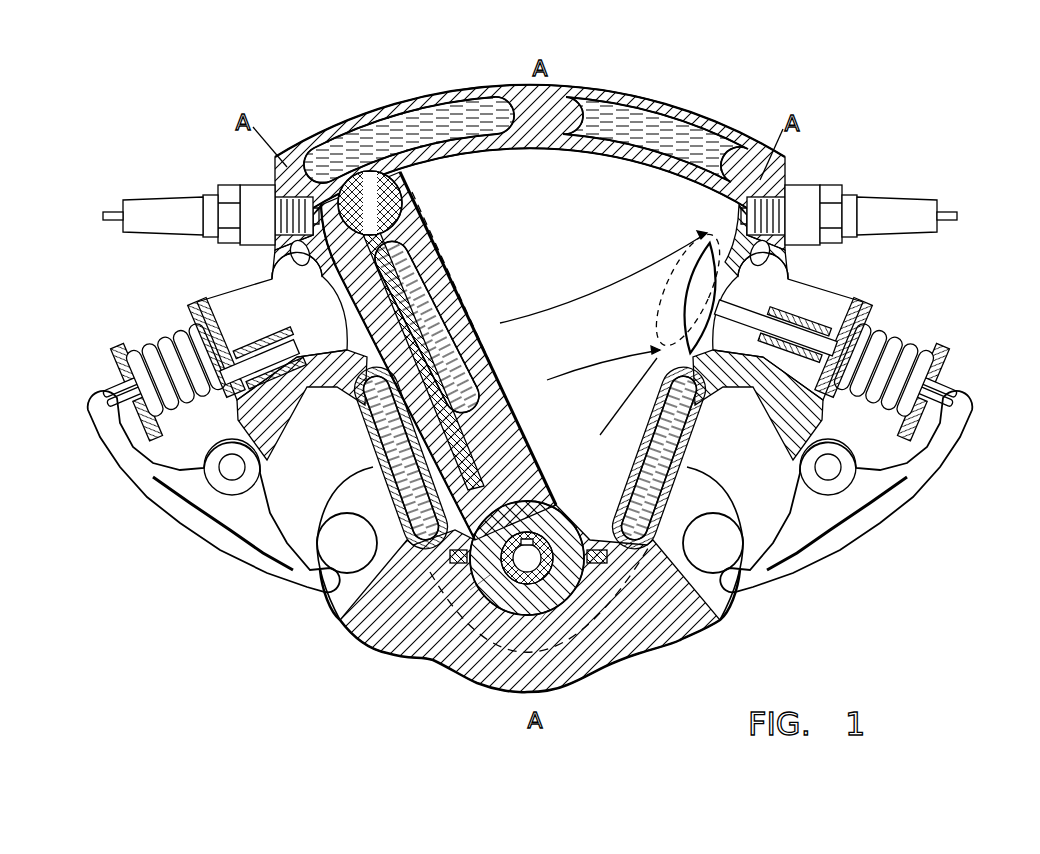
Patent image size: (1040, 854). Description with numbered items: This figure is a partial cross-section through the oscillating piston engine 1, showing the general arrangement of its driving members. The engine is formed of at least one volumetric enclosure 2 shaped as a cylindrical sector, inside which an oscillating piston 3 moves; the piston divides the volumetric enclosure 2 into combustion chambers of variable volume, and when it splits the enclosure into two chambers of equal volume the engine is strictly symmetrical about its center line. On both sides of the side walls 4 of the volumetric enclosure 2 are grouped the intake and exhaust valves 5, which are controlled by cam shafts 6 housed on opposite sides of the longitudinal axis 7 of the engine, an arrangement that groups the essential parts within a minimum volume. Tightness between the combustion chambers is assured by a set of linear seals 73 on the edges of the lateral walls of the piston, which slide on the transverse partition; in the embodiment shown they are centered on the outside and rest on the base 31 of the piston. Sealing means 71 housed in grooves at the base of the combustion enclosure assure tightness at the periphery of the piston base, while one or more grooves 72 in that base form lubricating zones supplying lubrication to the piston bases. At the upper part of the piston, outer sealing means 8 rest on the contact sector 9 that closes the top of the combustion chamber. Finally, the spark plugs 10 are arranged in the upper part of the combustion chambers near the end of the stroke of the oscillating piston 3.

The oscillating piston engine 1 is at (795, 176).
The volumetric enclosure 2 is at (603, 333).
The oscillating piston 3 is at (522, 460).
The base of the piston 31 is at (560, 518).
The side walls 4 is at (357, 440).
The intake and exhaust valves 5 is at (250, 336).
The cam shafts 6 is at (167, 500).
The longitudinal axis 7 is at (522, 565).
The sealing means 71 is at (440, 580).
The grooves 72 is at (485, 585).
The linear seals 73 is at (467, 490).
The outer sealing means 8 is at (385, 182).
The contact sector 9 is at (630, 157).
The spark plugs 10 is at (207, 212).